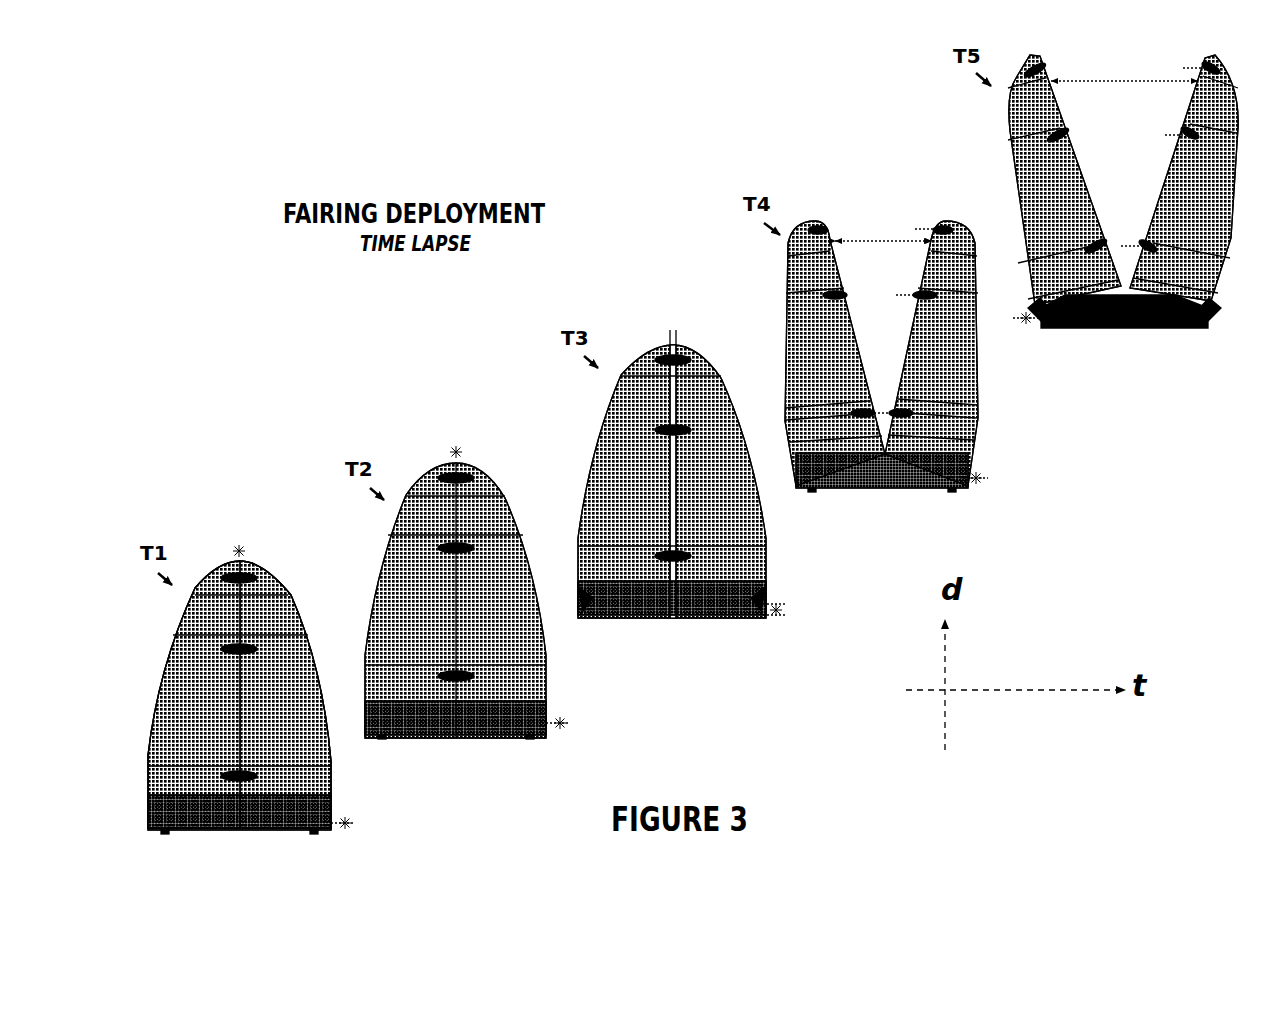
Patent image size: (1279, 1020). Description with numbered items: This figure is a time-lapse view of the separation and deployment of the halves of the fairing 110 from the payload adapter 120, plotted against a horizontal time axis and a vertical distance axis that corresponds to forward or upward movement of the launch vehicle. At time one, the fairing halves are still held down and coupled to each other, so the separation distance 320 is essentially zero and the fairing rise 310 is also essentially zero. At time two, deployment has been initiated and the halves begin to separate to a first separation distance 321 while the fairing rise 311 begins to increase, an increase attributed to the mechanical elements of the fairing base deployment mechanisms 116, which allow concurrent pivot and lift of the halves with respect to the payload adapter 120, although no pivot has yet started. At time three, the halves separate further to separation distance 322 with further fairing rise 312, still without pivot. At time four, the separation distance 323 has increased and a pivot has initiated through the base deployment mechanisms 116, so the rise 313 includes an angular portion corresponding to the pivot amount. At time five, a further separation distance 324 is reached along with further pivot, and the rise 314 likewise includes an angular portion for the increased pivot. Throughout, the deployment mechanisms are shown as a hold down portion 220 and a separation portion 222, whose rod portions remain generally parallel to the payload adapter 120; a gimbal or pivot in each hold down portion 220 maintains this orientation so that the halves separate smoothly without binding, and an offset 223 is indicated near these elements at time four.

The fairing 110 is at (234, 686).
The fairing base deployment mechanism 116 is at (740, 592).
The payload adapter 120 is at (241, 824).
The hold down portion 220 is at (933, 214).
The separation portion 222 is at (811, 216).
The edge offset 223 is at (907, 218).
The fairing rise 310 is at (337, 822).
The fairing rise 311 is at (552, 722).
The fairing rise 312 is at (768, 608).
The rise 313 is at (968, 477).
The rise 314 is at (1018, 318).
The separation distance 320 is at (226, 543).
The separation distance 321 is at (443, 444).
The separation distance 322 is at (656, 326).
The separation distance 323 is at (883, 248).
The separation distance 324 is at (1124, 91).